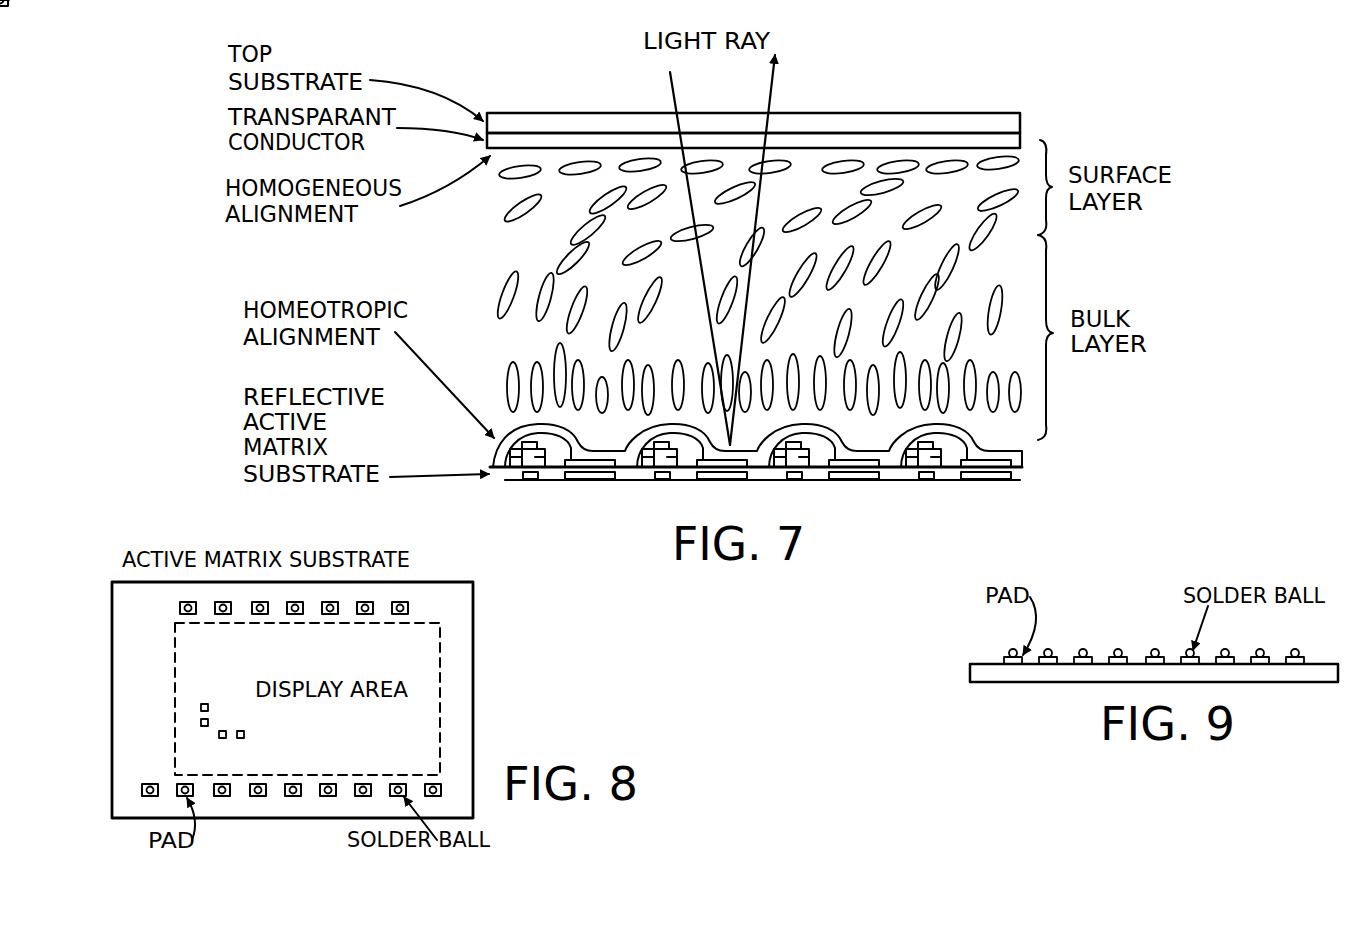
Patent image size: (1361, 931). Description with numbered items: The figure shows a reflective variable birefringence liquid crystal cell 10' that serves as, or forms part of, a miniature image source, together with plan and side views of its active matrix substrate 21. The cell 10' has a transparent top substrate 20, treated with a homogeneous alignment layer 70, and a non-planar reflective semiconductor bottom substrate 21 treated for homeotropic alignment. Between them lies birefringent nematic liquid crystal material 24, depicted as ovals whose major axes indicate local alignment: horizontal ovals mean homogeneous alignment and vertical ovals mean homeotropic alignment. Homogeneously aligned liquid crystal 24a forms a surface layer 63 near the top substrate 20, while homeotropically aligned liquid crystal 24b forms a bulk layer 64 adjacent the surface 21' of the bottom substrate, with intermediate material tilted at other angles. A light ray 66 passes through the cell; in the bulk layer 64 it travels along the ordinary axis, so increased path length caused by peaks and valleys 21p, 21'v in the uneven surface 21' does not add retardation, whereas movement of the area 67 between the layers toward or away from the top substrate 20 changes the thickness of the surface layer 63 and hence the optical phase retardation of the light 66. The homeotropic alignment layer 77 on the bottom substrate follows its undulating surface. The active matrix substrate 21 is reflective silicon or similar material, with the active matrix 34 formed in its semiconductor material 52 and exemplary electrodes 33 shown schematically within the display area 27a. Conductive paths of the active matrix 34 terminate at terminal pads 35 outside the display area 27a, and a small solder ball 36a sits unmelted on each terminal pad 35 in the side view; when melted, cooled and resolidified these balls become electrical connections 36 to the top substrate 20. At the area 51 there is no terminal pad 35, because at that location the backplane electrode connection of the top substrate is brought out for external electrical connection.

In FIG. 7, the liquid crystal cell 10' is at (753, 266).
In FIG. 7, the top substrate 20 is at (518, 120).
In FIG. 7, the homogeneous alignment layer 70 is at (600, 153).
In FIG. 7, the light ray 66 is at (671, 98).
In FIG. 7, the nematic liquid crystal material 24 is at (478, 270).
In FIG. 7, the homogeneously aligned liquid crystal material 24a is at (506, 218).
In FIG. 7, the homeotropically aligned liquid crystal material 24b is at (500, 362).
In FIG. 7, the surface layer 63 is at (1033, 161).
In FIG. 7, the area between surface layer and bulk layer 67 is at (1056, 227).
In FIG. 7, the bulk layer 64 is at (1054, 287).
In FIG. 7, the homeotropic alignment layer 77 is at (501, 412).
In FIG. 7, the peaks 21p is at (565, 406).
In FIG. 7, the surface of the substrate 21' is at (686, 442).
In FIG. 7, the valleys 21'v is at (767, 486).
In FIG. 7, the active matrix substrate 21 is at (727, 429).
In FIG. 8, the active matrix substrate 21 is at (265, 676).
In FIG. 9, the active matrix substrate 21 is at (1154, 698).
In FIG. 8, the display area 27a is at (172, 620).
In FIG. 8, the electrodes 33 is at (242, 727).
In FIG. 8, the terminal pads 35 is at (376, 636).
In FIG. 8, the electrical connections 36 is at (365, 613).
In FIG. 9, the solder ball 36a is at (1294, 655).
In FIG. 8, the area of the active matrix substrate 51 is at (446, 600).
In FIG. 8, the active matrix array 34 is at (462, 630).
In FIG. 8, the semiconductor material 52 is at (462, 685).
In FIG. 9, the semiconductor material 52 is at (1338, 672).